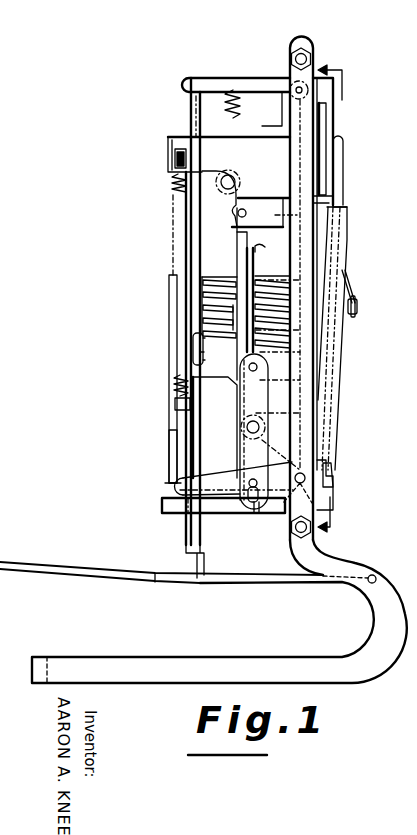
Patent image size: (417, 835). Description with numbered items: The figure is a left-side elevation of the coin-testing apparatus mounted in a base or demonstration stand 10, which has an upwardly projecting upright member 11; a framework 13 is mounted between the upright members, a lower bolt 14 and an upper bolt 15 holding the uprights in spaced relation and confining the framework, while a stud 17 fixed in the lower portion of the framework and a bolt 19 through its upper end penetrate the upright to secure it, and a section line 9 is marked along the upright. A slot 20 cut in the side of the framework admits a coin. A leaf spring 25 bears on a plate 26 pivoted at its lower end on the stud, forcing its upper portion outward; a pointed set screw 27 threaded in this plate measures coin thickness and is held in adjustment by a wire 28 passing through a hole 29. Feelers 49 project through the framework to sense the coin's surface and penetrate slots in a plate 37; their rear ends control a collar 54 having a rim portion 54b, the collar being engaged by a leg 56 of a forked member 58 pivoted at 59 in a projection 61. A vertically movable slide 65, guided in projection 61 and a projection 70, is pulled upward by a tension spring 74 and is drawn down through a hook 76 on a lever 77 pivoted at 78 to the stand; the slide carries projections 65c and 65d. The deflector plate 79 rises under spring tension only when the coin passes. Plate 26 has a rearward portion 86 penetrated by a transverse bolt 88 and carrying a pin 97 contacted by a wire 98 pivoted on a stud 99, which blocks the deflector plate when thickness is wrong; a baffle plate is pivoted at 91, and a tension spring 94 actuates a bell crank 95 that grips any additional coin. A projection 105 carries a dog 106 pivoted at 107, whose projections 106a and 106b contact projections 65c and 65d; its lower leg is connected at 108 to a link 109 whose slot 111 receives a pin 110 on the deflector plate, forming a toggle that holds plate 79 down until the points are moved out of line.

The section line 9- 9 is at (332, 294).
The base or demonstration stand 10 is at (320, 654).
The upright member 11 is at (291, 45).
The framework 13 is at (332, 98).
The bolt 14 is at (292, 534).
The bolt 15 is at (291, 59).
The stud 17 is at (306, 478).
The bolt 19 is at (296, 90).
The slot 20 is at (325, 118).
The leaf spring 25 is at (344, 162).
The plate 26 is at (347, 229).
The set screw 27 is at (358, 307).
The wire 28 is at (351, 292).
The hole 29 is at (344, 243).
The plate 37 is at (272, 257).
The feelers 49 is at (277, 335).
The collar 54 is at (169, 322).
The rim portion 54b is at (203, 279).
The leg 56 is at (169, 247).
The forked member 58 is at (166, 437).
The pivot 59 is at (175, 160).
The projection 61 is at (229, 258).
The vertically movable slide 65 is at (185, 101).
The projection 65c is at (192, 341).
The projection 65d is at (189, 410).
The projection 70 is at (213, 506).
The tension spring 74 is at (173, 185).
The hook 76 is at (190, 563).
The lever 77 is at (155, 584).
The pivot 78 is at (374, 575).
The deflector plate 79 is at (230, 474).
The rearwardly projecting portion 86 is at (332, 197).
The transverse bolt 88 is at (276, 212).
The pivot 91 is at (169, 147).
The tension spring 94 is at (228, 106).
The bell crank 95 is at (226, 81).
The pin 97 is at (244, 209).
The wire 98 is at (232, 242).
The stud 99 is at (234, 178).
The projection 105 is at (277, 378).
The dog 106 is at (219, 351).
The projection 106a is at (195, 354).
The projection 106b is at (190, 377).
The pivot 107 is at (215, 427).
The pivot connection 108 is at (247, 428).
The link 109 is at (274, 455).
The pin 110 is at (249, 483).
The slot 111 is at (255, 514).